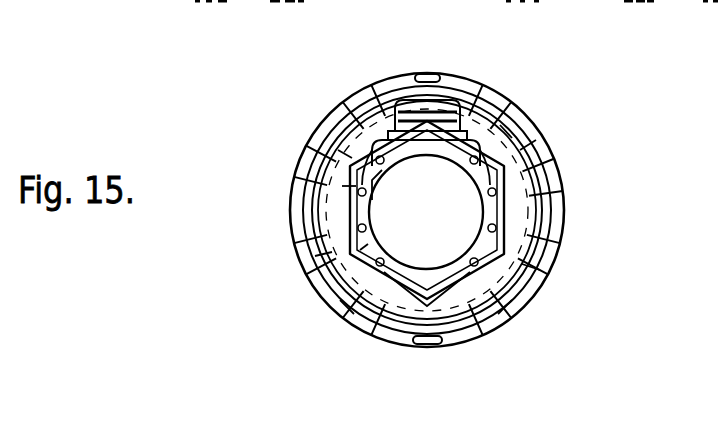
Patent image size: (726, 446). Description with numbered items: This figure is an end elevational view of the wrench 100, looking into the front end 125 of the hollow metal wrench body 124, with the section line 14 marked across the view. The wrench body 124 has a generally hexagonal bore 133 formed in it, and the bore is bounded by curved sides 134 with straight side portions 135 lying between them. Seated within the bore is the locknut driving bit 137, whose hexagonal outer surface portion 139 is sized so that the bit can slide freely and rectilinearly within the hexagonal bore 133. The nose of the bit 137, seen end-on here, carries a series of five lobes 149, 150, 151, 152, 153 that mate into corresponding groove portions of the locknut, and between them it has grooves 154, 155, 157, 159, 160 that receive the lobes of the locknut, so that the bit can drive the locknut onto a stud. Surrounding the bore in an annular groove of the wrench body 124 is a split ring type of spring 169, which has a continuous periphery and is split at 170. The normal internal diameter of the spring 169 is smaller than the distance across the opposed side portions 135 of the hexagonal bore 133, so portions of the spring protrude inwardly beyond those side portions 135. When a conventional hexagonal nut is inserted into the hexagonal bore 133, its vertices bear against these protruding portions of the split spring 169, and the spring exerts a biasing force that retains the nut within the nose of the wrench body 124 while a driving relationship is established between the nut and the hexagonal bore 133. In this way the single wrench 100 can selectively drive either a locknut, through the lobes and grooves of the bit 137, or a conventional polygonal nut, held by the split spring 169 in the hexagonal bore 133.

The section line 14- 14 is at (478, 18).
The wrench 100 is at (284, 278).
The wrench body 124 is at (564, 232).
The front end 125 is at (528, 180).
The hexagonal bore 133 is at (540, 196).
The curved sides 134 is at (362, 100).
The side portions 135 is at (338, 150).
The locknut driving bit 137 is at (470, 100).
The hexagonal outer surface portion 139 is at (383, 100).
The lobe 149 is at (457, 166).
The lobe 150 is at (479, 226).
The lobe 151 is at (425, 276).
The lobe 152 is at (366, 242).
The lobe 153 is at (380, 168).
The groove 154 is at (462, 90).
The groove 155 is at (505, 120).
The groove 157 is at (524, 312).
The groove 159 is at (336, 304).
The groove 160 is at (330, 192).
The split ring spring 169 is at (423, 74).
The split 170 is at (440, 348).